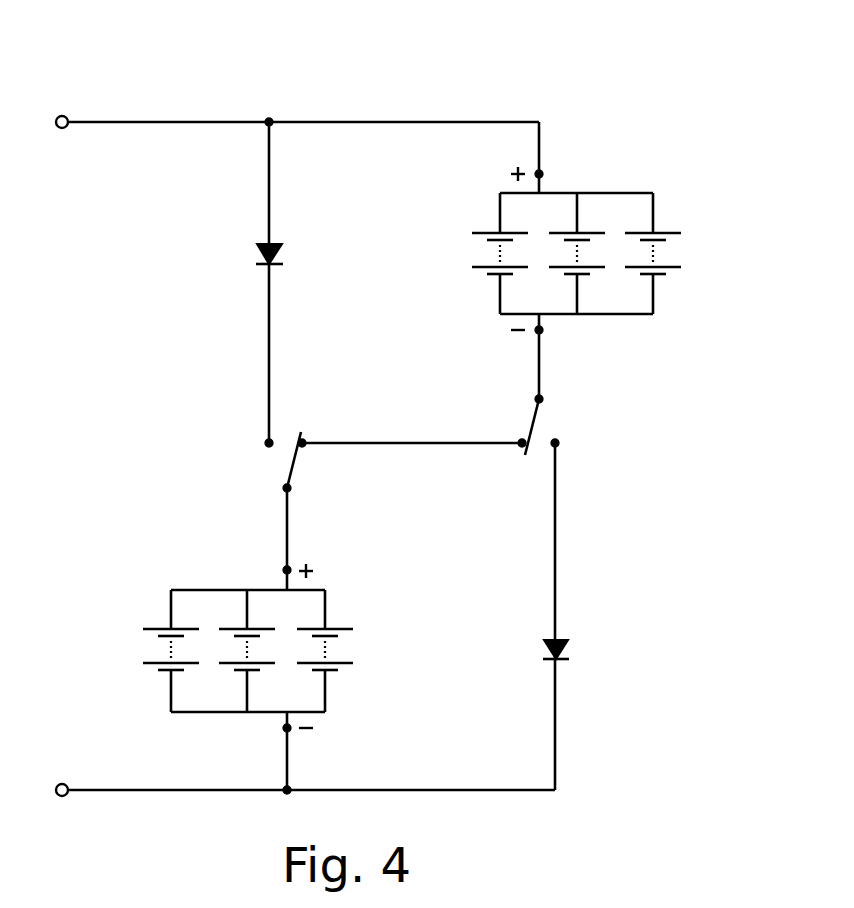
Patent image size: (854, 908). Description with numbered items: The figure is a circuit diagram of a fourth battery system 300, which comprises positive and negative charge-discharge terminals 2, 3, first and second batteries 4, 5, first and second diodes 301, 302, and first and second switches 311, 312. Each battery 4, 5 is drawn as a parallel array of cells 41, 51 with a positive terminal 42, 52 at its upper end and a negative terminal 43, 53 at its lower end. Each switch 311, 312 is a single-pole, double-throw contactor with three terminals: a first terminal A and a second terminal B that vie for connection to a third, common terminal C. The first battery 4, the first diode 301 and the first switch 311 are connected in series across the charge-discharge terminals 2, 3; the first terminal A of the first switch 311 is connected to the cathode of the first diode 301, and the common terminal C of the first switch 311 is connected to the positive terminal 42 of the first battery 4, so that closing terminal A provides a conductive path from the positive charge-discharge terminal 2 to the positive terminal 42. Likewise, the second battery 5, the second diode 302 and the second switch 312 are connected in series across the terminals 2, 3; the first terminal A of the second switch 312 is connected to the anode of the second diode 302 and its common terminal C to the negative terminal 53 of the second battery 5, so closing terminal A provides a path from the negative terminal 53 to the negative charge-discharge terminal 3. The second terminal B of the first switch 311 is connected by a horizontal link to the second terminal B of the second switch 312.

The positive charge-discharge terminal 2 is at (62, 116).
The negative charge-discharge terminal 3 is at (62, 784).
The first battery 4 is at (218, 645).
The cells 41 is at (157, 658).
The positive terminal 42 is at (283, 570).
The negative terminal 43 is at (283, 729).
The second battery 5 is at (608, 248).
The cells 51 is at (672, 267).
The positive terminal 52 is at (543, 173).
The negative terminal 53 is at (543, 334).
The battery system 300 is at (597, 61).
The first diode 301 is at (257, 256).
The second diode 302 is at (545, 650).
The first switch 311 is at (292, 472).
The second switch 312 is at (532, 418).